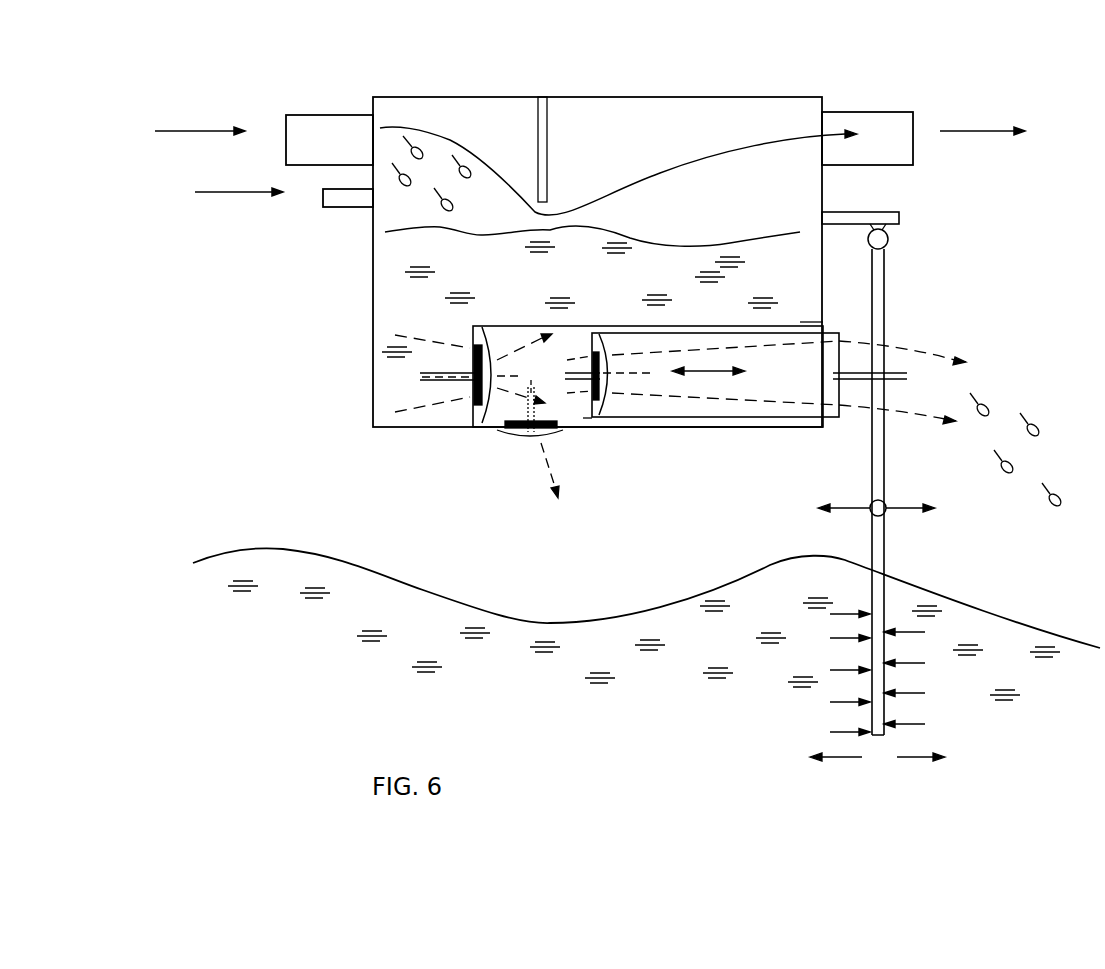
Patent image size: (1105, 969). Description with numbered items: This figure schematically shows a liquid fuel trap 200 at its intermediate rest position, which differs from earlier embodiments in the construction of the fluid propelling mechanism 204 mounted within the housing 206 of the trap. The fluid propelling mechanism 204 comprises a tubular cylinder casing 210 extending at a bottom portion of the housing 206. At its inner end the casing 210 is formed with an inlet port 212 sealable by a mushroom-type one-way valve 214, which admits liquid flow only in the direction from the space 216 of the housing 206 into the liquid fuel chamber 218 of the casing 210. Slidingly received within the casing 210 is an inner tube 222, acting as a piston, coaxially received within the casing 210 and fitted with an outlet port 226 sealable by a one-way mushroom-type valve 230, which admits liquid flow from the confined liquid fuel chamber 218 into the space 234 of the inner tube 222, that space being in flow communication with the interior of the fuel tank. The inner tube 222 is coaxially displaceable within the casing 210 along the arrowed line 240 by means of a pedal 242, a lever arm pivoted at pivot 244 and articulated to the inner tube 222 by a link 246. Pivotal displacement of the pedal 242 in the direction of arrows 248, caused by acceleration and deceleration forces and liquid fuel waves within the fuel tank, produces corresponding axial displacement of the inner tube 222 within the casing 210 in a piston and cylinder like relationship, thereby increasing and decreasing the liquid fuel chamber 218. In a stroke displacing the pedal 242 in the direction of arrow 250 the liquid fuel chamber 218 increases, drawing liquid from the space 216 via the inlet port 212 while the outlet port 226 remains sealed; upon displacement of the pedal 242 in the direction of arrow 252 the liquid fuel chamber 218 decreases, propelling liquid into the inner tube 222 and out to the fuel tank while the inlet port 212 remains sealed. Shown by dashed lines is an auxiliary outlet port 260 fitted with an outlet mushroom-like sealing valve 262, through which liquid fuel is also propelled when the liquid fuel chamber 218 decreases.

The liquid fuel trap 200 is at (300, 425).
The fluid propelling mechanism 204 is at (758, 444).
The housing 206 is at (709, 97).
The tubular cylinder casing 210 is at (807, 323).
The inlet port 212 is at (473, 341).
The mushroom-type one-way valve 214 is at (483, 332).
The space of the housing 216 is at (393, 293).
The liquid fuel chamber 218 is at (586, 420).
The inner tube 222 is at (713, 418).
The outlet port 226 is at (600, 405).
The one-way mushroom-type valve 230 is at (599, 335).
The space of the inner tube 234 is at (780, 378).
The arrowed line 240 is at (698, 372).
The pedal 242 is at (884, 466).
The pivot 244 is at (888, 234).
The link 246 is at (858, 380).
The arrows 248 is at (842, 512).
The arrow 250 is at (915, 745).
The arrow 252 is at (838, 757).
The auxiliary outlet port 260 is at (508, 398).
The outlet mushroom-like sealing valve 262 is at (530, 437).